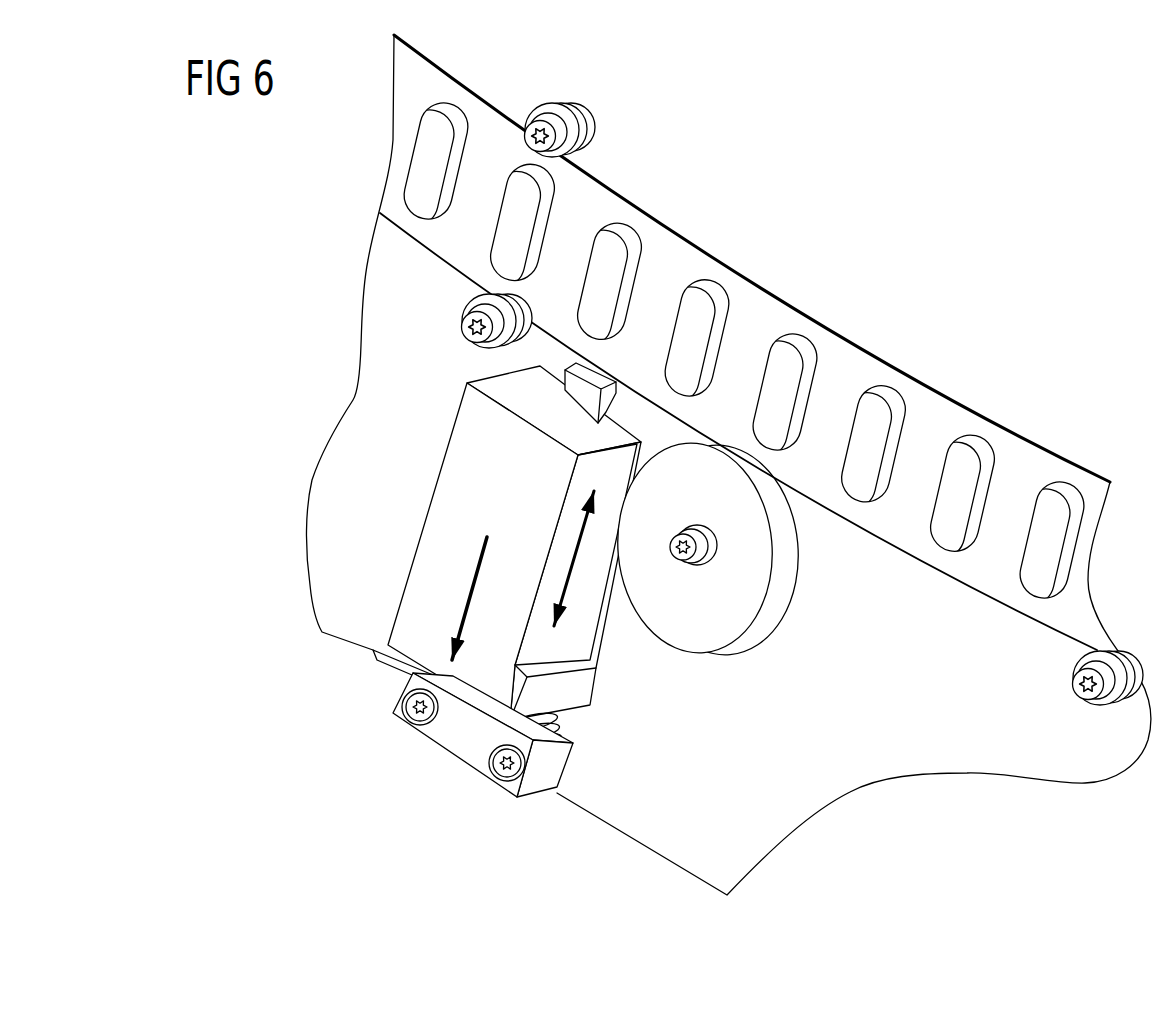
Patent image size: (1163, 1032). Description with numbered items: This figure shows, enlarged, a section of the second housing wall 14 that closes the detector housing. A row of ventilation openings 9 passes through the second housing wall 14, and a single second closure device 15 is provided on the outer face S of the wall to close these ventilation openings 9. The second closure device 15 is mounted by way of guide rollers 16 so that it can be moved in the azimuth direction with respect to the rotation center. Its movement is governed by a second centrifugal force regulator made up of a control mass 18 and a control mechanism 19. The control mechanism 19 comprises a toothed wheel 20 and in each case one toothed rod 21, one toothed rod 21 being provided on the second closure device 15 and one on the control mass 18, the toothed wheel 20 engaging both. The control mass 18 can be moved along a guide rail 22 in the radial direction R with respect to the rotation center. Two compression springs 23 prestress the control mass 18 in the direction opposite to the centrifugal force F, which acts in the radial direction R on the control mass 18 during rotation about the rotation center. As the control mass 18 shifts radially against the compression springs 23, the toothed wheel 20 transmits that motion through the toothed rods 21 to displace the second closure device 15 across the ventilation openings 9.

The ventilation openings 9 is at (693, 307).
The second housing wall 14 is at (905, 597).
The second closure device 15 is at (753, 337).
The guide rollers 16 is at (465, 329).
The control mass 18 is at (423, 607).
The control mechanism 19 is at (708, 609).
The toothed wheel 20 is at (758, 585).
The toothed rod 21 is at (793, 490).
The guide rail 22 is at (583, 398).
The compression springs 23 is at (493, 730).
The centrifugal force F is at (445, 578).
The radial direction R is at (615, 593).
The outer face S is at (653, 782).